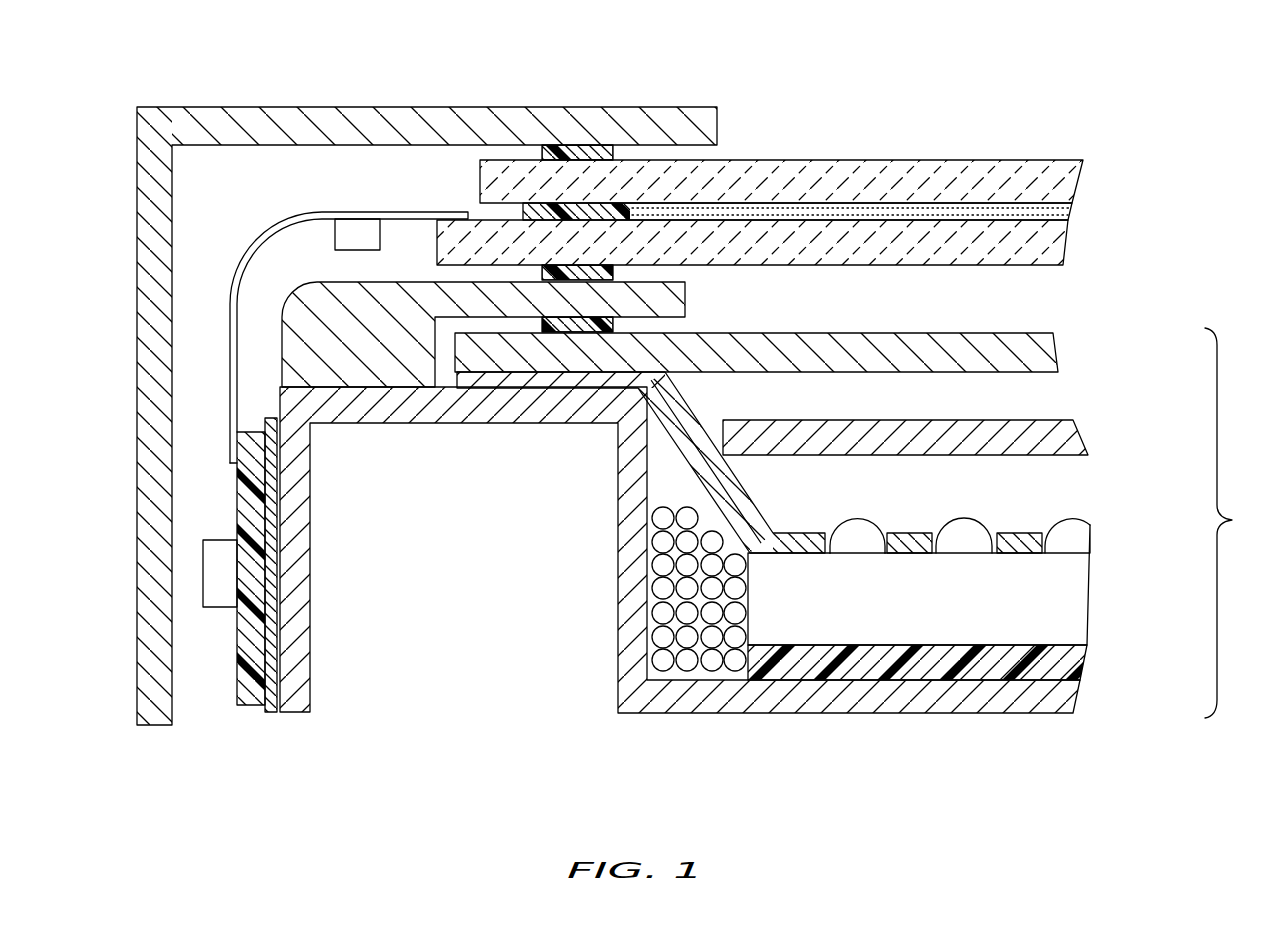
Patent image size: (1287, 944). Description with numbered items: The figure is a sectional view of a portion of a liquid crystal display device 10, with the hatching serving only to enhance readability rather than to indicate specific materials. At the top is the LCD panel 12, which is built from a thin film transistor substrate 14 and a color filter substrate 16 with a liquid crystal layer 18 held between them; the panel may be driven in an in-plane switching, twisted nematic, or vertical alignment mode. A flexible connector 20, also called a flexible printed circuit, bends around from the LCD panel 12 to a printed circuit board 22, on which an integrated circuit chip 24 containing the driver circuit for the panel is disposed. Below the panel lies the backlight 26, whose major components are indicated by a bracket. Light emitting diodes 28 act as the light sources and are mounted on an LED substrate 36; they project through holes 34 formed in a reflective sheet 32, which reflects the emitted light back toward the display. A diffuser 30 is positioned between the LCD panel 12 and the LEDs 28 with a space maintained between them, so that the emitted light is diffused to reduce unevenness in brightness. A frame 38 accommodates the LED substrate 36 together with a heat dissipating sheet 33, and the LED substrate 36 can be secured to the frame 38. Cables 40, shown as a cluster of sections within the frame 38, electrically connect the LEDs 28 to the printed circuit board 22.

The liquid crystal display device 10 is at (1152, 69).
The LCD panel 12 is at (756, 126).
The thin film transistor substrate 14 is at (1016, 235).
The color filter substrate 16 is at (945, 187).
The liquid crystal layer 18 is at (873, 213).
The connector 20 is at (248, 252).
The printed circuit board 22 is at (237, 663).
The integrated circuit chip 24 is at (203, 577).
The backlight 26 is at (1235, 523).
The light emitting diode 28 is at (852, 541).
The diffuser 30 is at (1058, 350).
The reflective sheet 32 is at (690, 455).
The heat dissipating sheet 33 is at (1075, 665).
The hole 34 is at (850, 526).
The LED substrate 36 is at (1073, 603).
The frame 38 is at (733, 700).
The cable 40 is at (663, 672).